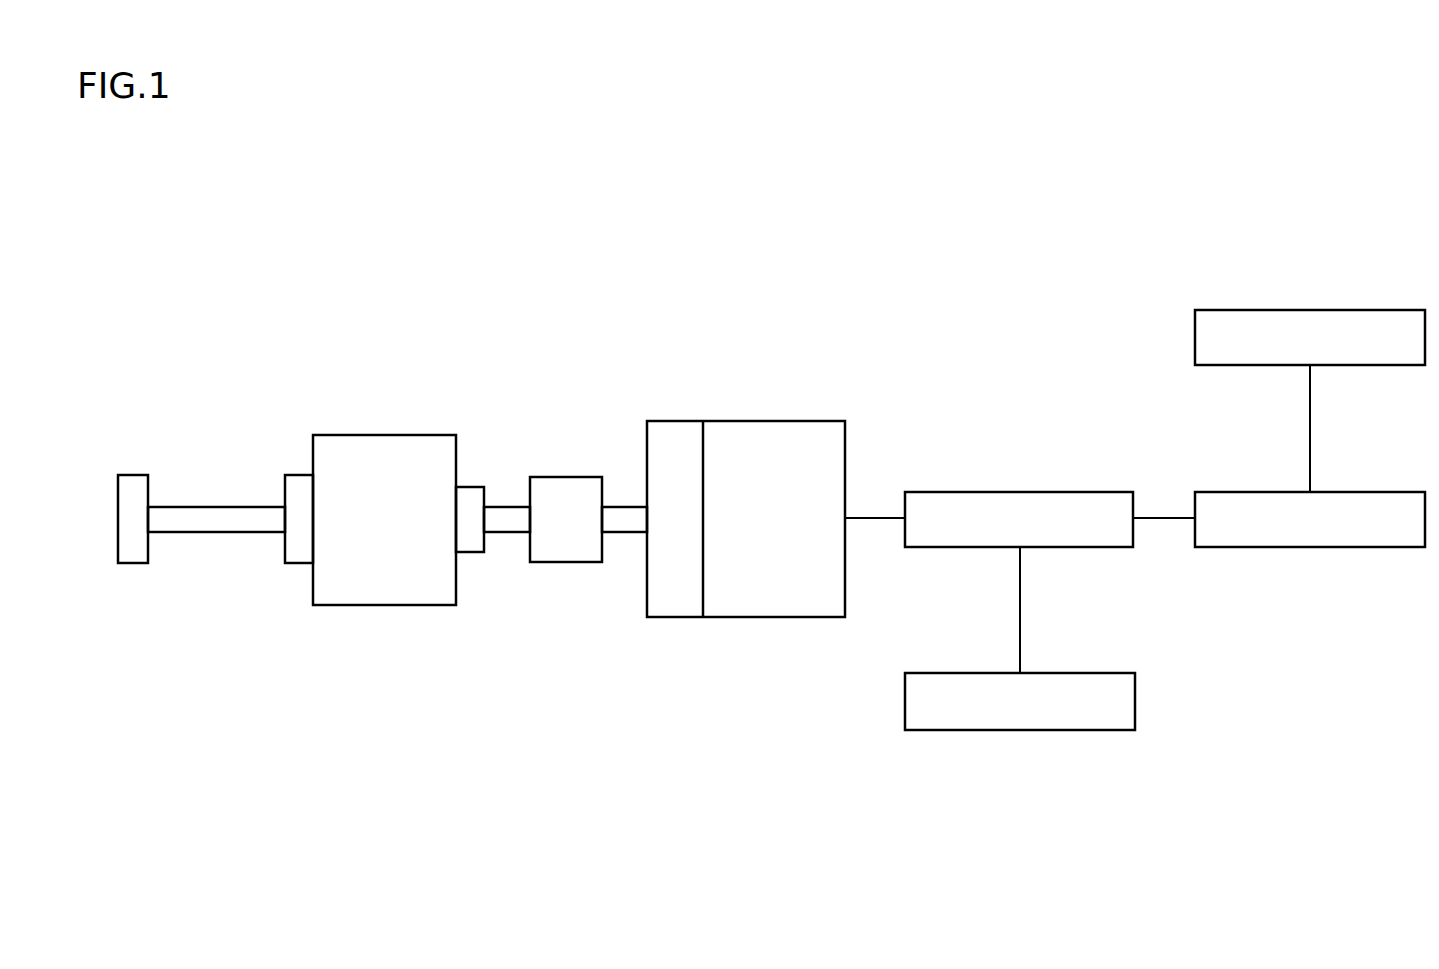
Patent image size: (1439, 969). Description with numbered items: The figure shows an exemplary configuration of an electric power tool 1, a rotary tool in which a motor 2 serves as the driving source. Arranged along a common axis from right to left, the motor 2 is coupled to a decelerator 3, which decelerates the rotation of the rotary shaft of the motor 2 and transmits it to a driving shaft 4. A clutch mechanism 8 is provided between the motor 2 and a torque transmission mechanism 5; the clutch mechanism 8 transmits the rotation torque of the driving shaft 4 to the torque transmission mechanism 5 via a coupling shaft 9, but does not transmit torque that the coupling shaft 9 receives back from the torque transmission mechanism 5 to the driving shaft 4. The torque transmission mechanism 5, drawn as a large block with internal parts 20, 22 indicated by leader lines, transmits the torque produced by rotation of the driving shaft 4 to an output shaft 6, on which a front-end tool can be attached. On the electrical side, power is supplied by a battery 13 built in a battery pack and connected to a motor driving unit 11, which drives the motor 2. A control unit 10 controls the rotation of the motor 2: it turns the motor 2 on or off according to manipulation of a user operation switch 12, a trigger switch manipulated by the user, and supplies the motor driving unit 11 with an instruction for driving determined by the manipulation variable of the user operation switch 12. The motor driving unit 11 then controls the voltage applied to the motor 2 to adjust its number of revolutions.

The electric power tool 1 is at (715, 876).
The motor 2 is at (770, 420).
The decelerator 3 is at (676, 420).
The driving shaft 4 is at (627, 505).
The torque transmission mechanism 5 is at (385, 435).
The output shaft 6 is at (213, 505).
The clutch mechanism 8 is at (563, 477).
The coupling shaft 9 is at (508, 505).
The control unit 10 is at (1387, 492).
The motor driving unit 11 is at (1095, 492).
The user operation switch 12 is at (1385, 310).
The battery 13 is at (1095, 673).
The reduction mechanism 20 is at (395, 537).
The housing 22 is at (345, 587).